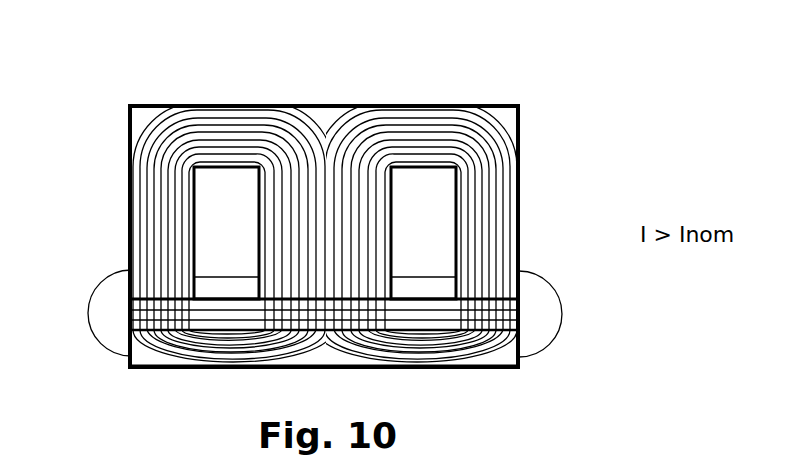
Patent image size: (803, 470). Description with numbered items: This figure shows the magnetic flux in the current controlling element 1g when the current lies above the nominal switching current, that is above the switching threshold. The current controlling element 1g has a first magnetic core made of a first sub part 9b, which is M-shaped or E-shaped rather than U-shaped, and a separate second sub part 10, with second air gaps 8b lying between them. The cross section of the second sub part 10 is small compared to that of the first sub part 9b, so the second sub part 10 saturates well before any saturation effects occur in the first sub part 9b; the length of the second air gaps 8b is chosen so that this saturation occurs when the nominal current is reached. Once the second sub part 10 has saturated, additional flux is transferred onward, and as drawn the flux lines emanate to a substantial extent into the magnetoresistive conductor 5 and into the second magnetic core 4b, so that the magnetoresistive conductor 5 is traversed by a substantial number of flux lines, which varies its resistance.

The current controlling element 1g is at (99, 71).
The first sub part 9b is at (519, 210).
The second air gaps 8b is at (522, 298).
The second sub part 10 is at (521, 317).
The magnetoresistive conductor 5 is at (522, 332).
The second magnetic core 4b is at (520, 370).